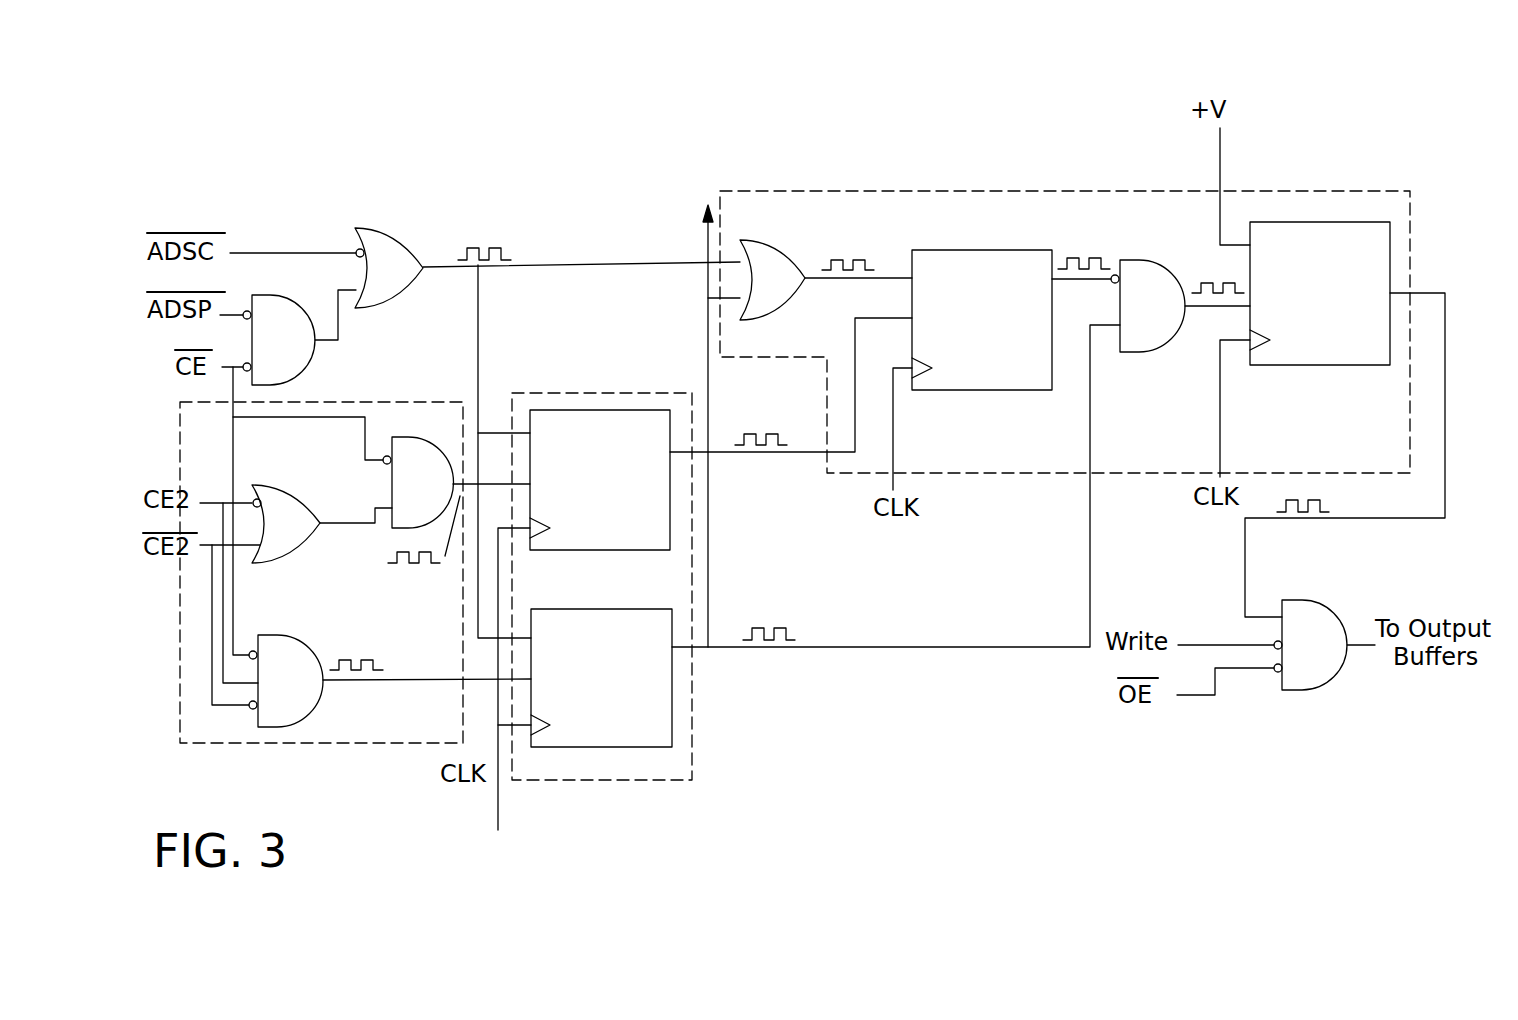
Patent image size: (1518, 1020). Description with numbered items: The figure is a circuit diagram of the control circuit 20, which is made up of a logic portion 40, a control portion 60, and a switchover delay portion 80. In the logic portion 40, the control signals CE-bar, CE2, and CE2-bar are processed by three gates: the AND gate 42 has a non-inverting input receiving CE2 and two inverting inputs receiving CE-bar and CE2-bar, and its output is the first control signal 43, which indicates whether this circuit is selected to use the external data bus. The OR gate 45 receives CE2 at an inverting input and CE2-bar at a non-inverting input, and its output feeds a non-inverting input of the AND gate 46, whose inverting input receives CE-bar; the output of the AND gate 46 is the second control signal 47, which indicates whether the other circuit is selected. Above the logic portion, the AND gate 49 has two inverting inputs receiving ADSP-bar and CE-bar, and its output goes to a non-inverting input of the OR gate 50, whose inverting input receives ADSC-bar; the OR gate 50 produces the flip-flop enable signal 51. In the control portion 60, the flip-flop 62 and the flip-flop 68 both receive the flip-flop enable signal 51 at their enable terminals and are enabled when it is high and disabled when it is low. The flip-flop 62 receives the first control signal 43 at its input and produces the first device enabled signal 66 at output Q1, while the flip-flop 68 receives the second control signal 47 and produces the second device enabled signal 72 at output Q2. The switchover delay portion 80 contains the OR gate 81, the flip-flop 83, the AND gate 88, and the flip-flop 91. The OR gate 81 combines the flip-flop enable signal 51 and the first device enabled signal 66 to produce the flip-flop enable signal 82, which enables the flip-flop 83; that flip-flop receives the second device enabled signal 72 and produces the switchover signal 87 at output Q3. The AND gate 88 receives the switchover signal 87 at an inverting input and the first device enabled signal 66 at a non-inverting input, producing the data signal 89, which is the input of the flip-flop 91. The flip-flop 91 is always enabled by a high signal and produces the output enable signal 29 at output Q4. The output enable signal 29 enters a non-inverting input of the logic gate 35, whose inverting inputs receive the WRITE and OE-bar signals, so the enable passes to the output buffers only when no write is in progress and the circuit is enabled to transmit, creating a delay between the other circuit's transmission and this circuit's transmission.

The control circuit 20 is at (930, 692).
The output enable signal 29 is at (1328, 505).
The logic gate 35 is at (1305, 600).
The logic portion 40 is at (340, 745).
The logic gate 42 is at (292, 640).
The first control signal 43 is at (380, 659).
The logic gate 45 is at (276, 489).
The logic gate 46 is at (390, 495).
The second control signal 47 is at (388, 561).
The AND gate 49 is at (312, 362).
The OR gate 50 is at (395, 240).
The flip-flop enable signal 51 is at (505, 252).
The control portion 60 is at (556, 393).
The flip-flop 62 is at (672, 703).
The first device enabled signal 66 is at (790, 630).
The flip-flop 68 is at (635, 410).
The second device enabled signal 72 is at (778, 433).
The switchover delay portion 80 is at (970, 473).
The logic gate 81 is at (770, 248).
The flip-flop enable signal 82 is at (870, 262).
The flip-flop 83 is at (983, 250).
The switchover signal 87 is at (1080, 255).
The logic gate 88 is at (1145, 260).
The data signal 89 is at (1212, 283).
The flip-flop 91 is at (1390, 252).